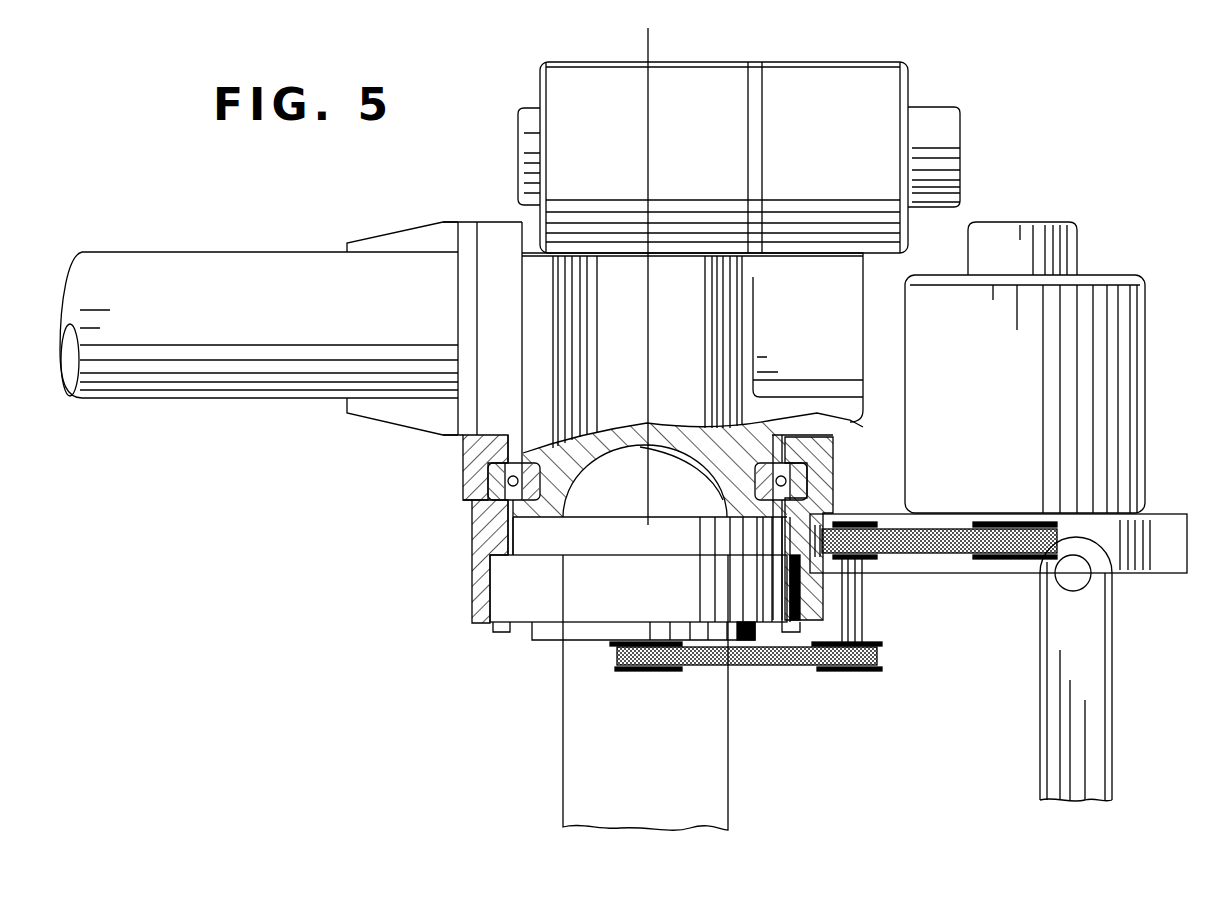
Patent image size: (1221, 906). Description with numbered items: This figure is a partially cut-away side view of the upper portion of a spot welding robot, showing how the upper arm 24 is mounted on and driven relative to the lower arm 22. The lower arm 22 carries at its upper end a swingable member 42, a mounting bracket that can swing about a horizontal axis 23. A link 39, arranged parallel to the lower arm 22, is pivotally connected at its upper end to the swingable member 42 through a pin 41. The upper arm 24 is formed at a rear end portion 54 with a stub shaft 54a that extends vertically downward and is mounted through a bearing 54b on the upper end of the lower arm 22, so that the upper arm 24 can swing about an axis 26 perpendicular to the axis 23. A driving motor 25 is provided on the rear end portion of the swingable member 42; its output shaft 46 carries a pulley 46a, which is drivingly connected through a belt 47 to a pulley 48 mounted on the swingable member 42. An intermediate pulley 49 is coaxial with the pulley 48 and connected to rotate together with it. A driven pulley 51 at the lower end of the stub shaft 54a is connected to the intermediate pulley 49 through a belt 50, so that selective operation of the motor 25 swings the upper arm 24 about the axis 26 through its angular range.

The lower arm 22 is at (573, 752).
The horizontal axis 23 is at (647, 525).
The upper arm 24 is at (216, 268).
The driving motor 25 is at (1128, 393).
The axis 26 is at (647, 98).
The link 39 is at (1097, 723).
The pin 41 is at (1083, 580).
The swingable member 42 is at (1163, 538).
The output shaft 46 is at (1013, 560).
The pulley 46a is at (987, 560).
The belt 47 is at (902, 547).
The pulley 48 is at (870, 523).
The intermediate pulley 49 is at (872, 670).
The belt 50 is at (757, 667).
The driven pulley 51 is at (632, 672).
The rear end portion 54 is at (560, 280).
The stub shaft 54a is at (470, 447).
The bearing 54b is at (480, 517).